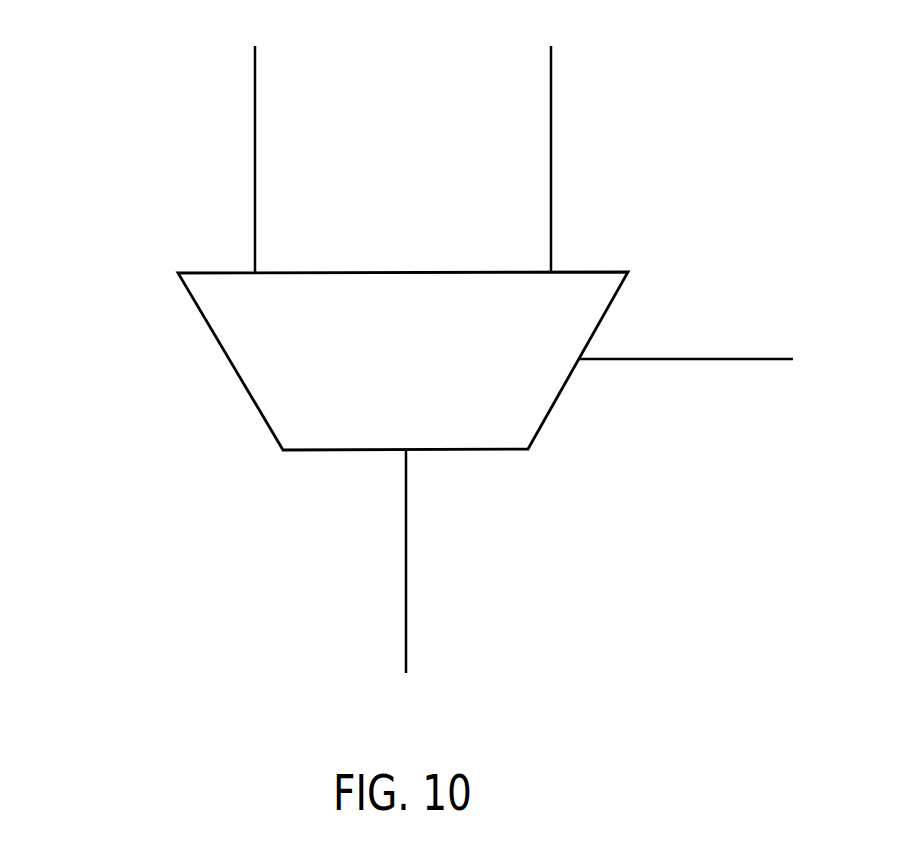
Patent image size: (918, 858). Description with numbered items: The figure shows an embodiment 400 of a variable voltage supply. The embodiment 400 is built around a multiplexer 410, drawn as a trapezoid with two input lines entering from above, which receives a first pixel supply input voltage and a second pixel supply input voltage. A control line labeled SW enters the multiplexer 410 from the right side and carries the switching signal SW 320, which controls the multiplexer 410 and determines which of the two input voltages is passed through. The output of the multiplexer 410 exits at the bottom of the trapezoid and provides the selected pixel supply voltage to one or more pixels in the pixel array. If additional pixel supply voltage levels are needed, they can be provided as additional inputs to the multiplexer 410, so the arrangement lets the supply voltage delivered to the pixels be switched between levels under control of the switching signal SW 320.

The embodiment of variable voltage supply 400 is at (70, 72).
The multiplexer 410 is at (241, 381).
The switching signal SW 320 is at (697, 330).